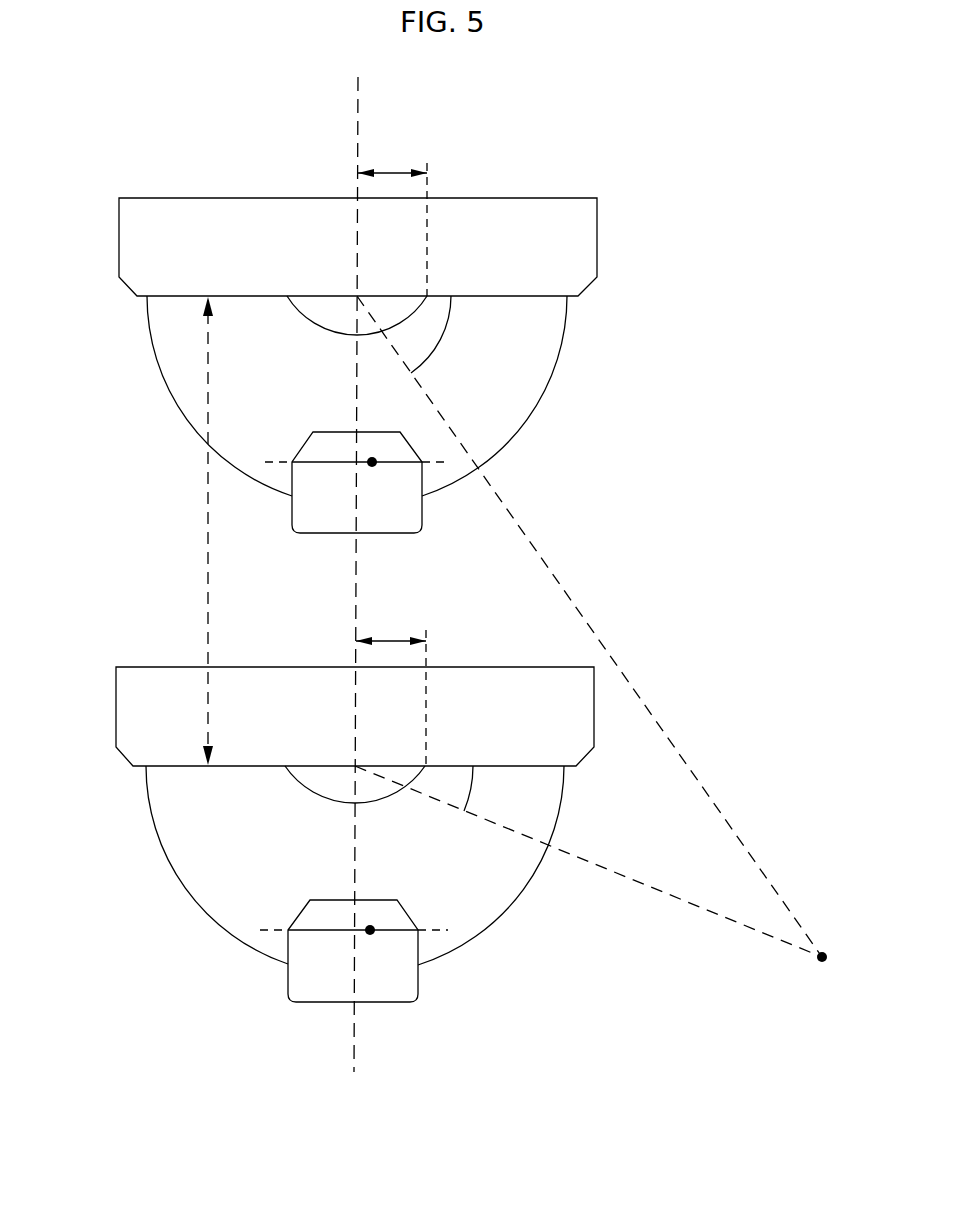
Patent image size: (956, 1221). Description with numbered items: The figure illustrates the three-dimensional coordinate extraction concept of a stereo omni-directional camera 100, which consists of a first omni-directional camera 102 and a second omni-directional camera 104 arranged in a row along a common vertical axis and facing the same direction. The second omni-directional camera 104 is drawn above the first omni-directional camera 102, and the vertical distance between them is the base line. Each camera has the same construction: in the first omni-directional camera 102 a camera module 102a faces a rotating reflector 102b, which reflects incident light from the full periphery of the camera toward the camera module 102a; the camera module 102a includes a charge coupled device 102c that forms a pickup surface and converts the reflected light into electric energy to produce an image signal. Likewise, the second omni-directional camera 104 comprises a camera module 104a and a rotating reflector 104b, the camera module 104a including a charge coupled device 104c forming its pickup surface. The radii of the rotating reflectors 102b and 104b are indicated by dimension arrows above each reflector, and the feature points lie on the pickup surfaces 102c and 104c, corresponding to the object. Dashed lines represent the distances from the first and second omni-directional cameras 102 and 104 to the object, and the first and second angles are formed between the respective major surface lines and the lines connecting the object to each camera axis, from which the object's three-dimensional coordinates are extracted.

The stereo omni-directional camera 100 is at (702, 169).
The first omni-directional camera 102 is at (135, 859).
The camera module 102a is at (288, 966).
The rotating reflector 102b is at (305, 786).
The charge coupled device 102c is at (320, 932).
The second omni-directional camera 104 is at (140, 389).
The camera module 104a is at (292, 499).
The rotating reflector 104b is at (305, 318).
The charge coupled device 104c is at (320, 464).